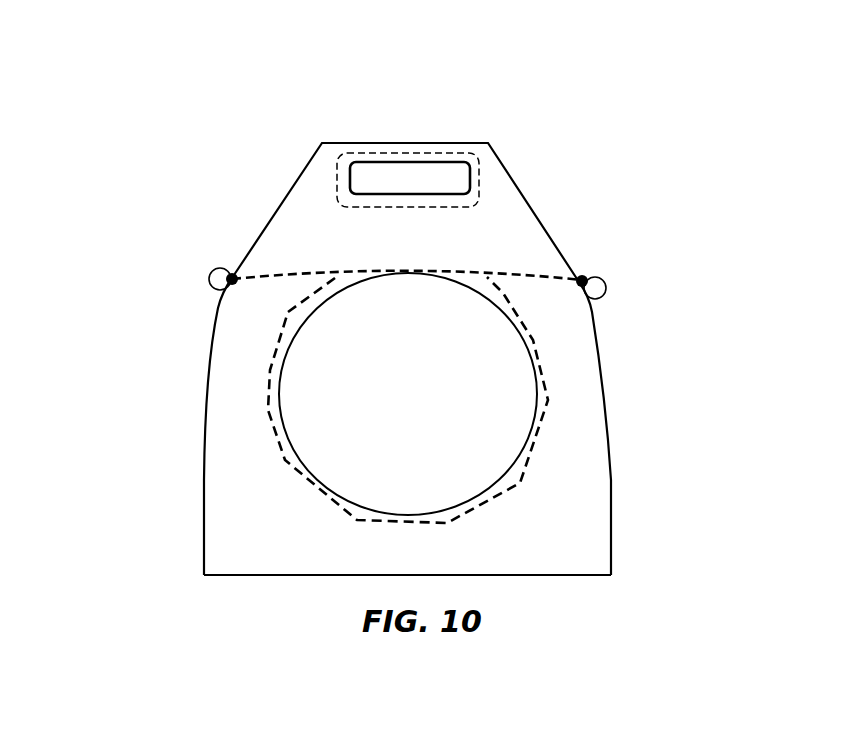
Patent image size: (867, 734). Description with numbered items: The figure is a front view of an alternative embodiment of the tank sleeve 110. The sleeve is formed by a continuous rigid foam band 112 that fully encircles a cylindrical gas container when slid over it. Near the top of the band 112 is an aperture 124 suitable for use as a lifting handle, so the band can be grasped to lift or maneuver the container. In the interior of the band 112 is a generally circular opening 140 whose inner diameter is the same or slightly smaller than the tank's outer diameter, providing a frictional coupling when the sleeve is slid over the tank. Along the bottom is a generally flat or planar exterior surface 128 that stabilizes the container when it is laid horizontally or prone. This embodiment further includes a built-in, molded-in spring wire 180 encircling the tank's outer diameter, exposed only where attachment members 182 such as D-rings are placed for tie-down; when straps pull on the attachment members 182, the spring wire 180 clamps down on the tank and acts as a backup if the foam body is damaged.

The tank sleeve 110 is at (596, 188).
The band 112 is at (567, 488).
The aperture 124 is at (348, 163).
The planar exterior surface 128 is at (237, 577).
The circular opening 140 is at (270, 420).
The spring wire 180 is at (336, 180).
The attachment members 182 is at (209, 285).